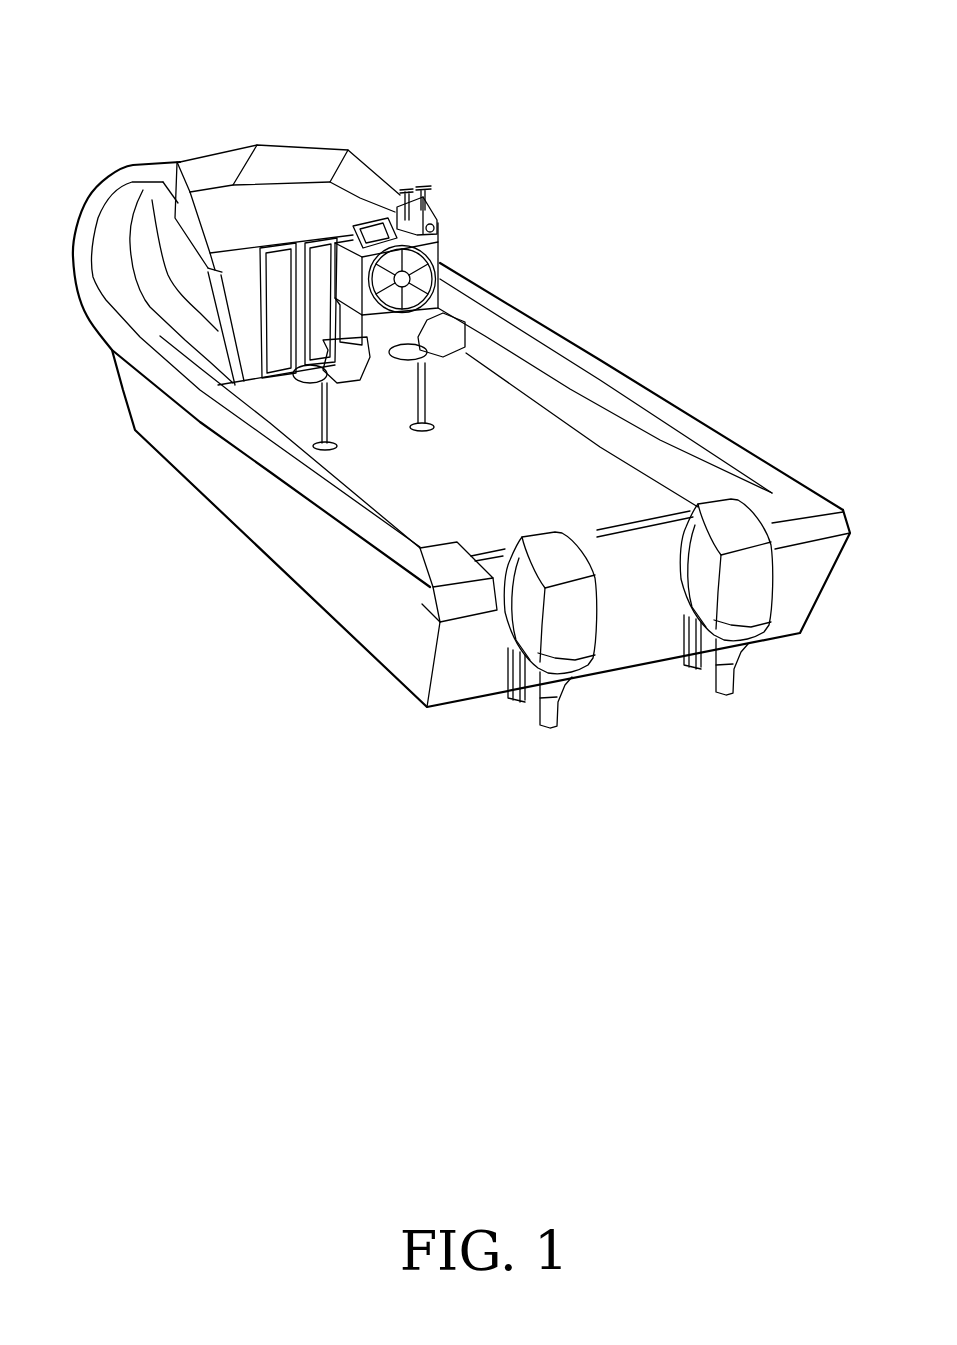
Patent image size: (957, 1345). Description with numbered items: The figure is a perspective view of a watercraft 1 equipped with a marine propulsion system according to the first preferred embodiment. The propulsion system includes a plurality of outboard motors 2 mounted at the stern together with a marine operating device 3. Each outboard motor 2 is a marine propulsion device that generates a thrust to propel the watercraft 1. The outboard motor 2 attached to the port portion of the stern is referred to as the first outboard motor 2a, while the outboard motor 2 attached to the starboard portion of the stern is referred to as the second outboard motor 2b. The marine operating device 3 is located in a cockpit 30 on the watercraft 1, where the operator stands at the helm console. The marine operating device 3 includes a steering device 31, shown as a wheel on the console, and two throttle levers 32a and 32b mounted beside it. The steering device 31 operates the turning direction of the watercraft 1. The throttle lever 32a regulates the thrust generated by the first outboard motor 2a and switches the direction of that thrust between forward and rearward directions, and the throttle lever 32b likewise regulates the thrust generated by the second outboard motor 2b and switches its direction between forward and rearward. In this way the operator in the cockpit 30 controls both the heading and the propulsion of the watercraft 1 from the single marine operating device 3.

The watercraft 1 is at (633, 376).
The outboard motors 2 is at (657, 678).
The first outboard motor 2a is at (567, 703).
The second outboard motor 2b is at (742, 668).
The marine operating device 3 is at (441, 205).
The cockpit 30 is at (457, 305).
The steering device 31 is at (440, 263).
The throttle lever 32a is at (418, 200).
The throttle lever 32b is at (407, 198).